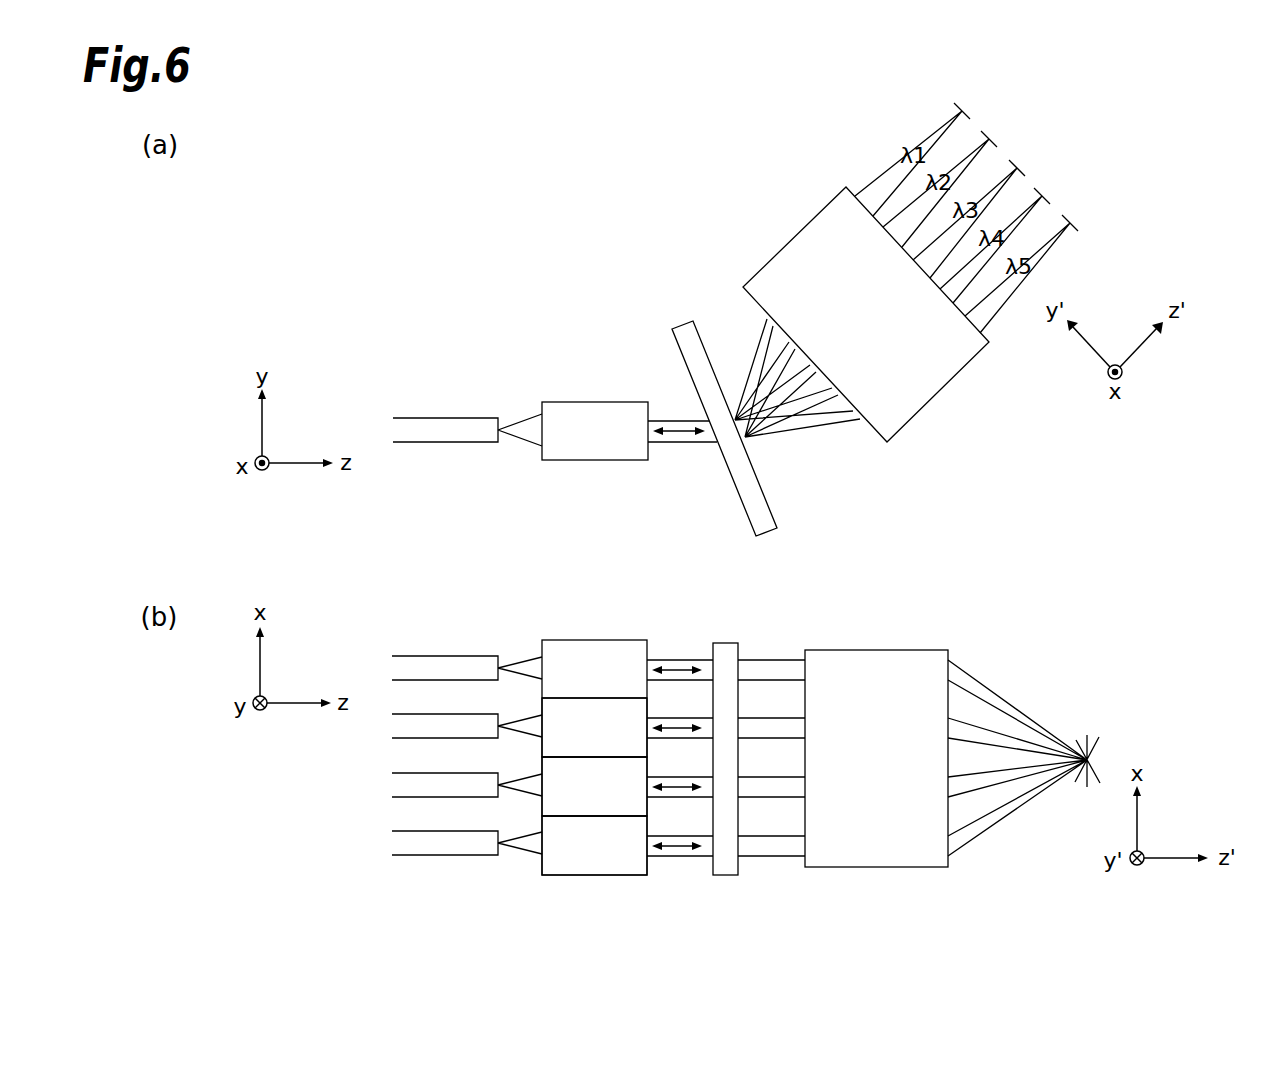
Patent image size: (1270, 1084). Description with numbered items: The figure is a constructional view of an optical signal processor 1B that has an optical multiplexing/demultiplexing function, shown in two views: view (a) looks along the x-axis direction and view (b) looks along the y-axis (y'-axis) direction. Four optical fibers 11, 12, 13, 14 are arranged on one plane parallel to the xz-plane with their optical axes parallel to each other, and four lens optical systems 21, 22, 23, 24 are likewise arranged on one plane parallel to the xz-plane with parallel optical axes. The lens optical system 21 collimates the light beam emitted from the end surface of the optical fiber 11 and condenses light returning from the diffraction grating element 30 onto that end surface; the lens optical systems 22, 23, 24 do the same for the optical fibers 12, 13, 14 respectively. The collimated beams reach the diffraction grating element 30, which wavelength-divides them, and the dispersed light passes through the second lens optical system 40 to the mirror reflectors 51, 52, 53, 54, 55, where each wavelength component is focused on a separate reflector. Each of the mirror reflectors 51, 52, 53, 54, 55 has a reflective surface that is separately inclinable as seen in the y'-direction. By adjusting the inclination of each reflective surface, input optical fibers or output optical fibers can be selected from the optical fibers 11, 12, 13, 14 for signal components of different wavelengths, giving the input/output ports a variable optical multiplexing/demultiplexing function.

The optical signal processor 1B is at (553, 192).
The optical fiber 11 is at (427, 418).
The optical fiber 12 is at (422, 714).
The optical fiber 13 is at (422, 773).
The optical fiber 14 is at (422, 831).
The lens optical system 21 is at (569, 402).
The lens optical system 22 is at (542, 709).
The lens optical system 23 is at (542, 767).
The lens optical system 24 is at (542, 826).
The diffraction grating element 30 is at (683, 322).
The second lens optical system 40 is at (792, 235).
The mirror reflector 51 is at (970, 119).
The mirror reflector 52 is at (997, 147).
The mirror reflector 53 is at (1025, 176).
The mirror reflector 54 is at (1050, 204).
The mirror reflector 55 is at (1078, 231).